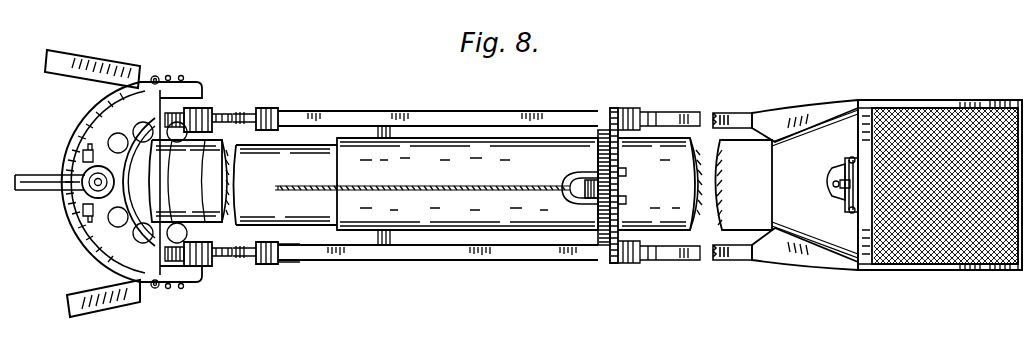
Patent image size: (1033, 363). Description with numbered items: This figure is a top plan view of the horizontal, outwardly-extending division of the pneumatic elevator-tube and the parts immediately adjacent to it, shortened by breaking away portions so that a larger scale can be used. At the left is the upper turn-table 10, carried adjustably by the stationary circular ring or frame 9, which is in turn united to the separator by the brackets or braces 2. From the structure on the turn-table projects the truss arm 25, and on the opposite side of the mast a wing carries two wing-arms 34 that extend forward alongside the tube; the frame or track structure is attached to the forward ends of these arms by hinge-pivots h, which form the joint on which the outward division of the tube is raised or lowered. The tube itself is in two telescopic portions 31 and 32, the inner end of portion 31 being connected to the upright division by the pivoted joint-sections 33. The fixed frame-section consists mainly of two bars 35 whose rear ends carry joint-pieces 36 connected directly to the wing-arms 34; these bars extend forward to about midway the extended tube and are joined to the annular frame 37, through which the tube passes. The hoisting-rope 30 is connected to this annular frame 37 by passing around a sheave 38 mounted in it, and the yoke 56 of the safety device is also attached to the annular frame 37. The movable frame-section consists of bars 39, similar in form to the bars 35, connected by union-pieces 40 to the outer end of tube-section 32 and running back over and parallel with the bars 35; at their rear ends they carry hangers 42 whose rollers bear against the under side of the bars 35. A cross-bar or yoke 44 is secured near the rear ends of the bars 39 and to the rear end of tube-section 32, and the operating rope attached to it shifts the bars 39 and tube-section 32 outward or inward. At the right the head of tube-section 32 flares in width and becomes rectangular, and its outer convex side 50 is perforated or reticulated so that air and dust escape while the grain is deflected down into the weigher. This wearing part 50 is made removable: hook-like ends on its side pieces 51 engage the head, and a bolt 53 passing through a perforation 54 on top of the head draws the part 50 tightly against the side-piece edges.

The brackets or braces 2 is at (98, 62).
The stationary circular turn-table ring or frame 9 is at (62, 141).
The turn-table 10 is at (110, 108).
The projecting arm 25 is at (58, 195).
The wing-arms 34 is at (95, 262).
The joint-sections 33 is at (186, 181).
The hinge-pivots h is at (166, 116).
The joint-pieces 36 is at (200, 106).
The bars 35 is at (243, 108).
The hangers 42 is at (270, 265).
The bars 39 is at (412, 120).
The cross-bar or yoke 44 is at (392, 246).
The telescopic tube portion 31 is at (402, 185).
The hoisting-rope 30 is at (430, 184).
The yoke 56 is at (584, 178).
The sheave 38 is at (575, 182).
The annular frame 37 is at (598, 240).
The telescopic tube portion 32 is at (660, 184).
The union-pieces 40 is at (794, 108).
The bolt 53 is at (830, 184).
The perforation 54 is at (848, 165).
The side pieces 51 is at (922, 98).
The perforated or reticulated side 50 is at (946, 186).